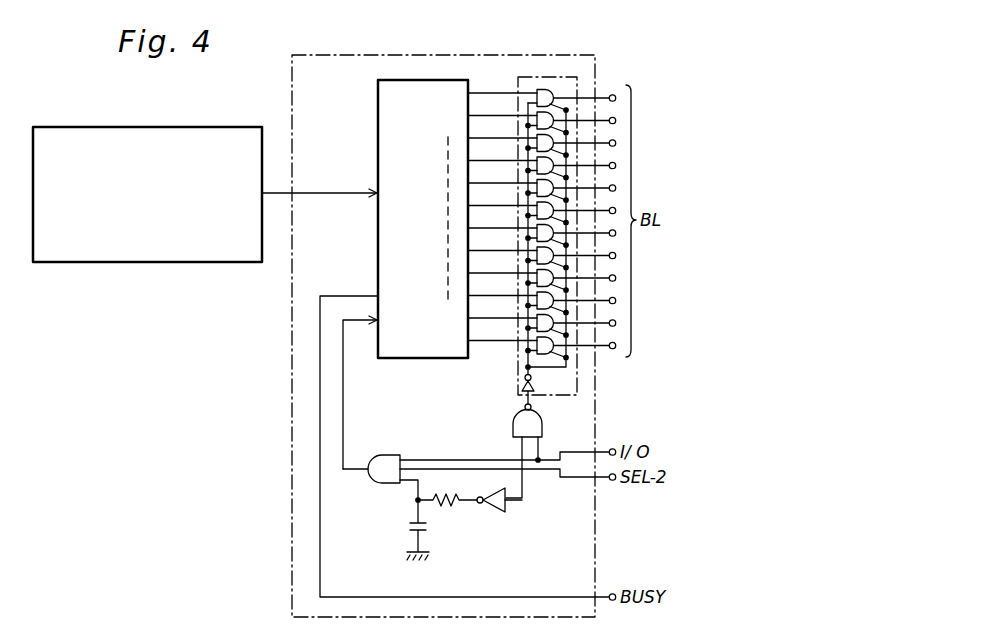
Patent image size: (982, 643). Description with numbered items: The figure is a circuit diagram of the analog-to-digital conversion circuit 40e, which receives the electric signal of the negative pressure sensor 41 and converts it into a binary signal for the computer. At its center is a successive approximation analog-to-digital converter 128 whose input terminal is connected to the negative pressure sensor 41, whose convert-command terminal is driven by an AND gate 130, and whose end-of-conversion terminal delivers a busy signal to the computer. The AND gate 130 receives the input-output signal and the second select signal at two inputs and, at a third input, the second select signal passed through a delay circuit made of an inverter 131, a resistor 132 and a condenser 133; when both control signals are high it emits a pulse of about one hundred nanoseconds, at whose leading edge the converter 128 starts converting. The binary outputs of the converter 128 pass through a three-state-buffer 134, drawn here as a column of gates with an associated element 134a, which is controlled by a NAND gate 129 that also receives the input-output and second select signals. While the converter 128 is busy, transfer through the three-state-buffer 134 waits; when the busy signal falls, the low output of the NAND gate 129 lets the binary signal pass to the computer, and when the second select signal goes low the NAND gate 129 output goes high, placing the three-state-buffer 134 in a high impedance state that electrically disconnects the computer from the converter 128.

The negative pressure sensor 41 is at (190, 266).
The analog-to-digital conversion circuit 40e is at (292, 376).
The successive approximation analog-to-digital converter 128 is at (417, 249).
The three-state-buffer 134 is at (516, 356).
The inverter 134a is at (520, 399).
The NAND gate 129 is at (513, 430).
The AND gate 130 is at (385, 485).
The inverter 131 is at (499, 511).
The resistor 132 is at (445, 506).
The condenser 133 is at (410, 528).